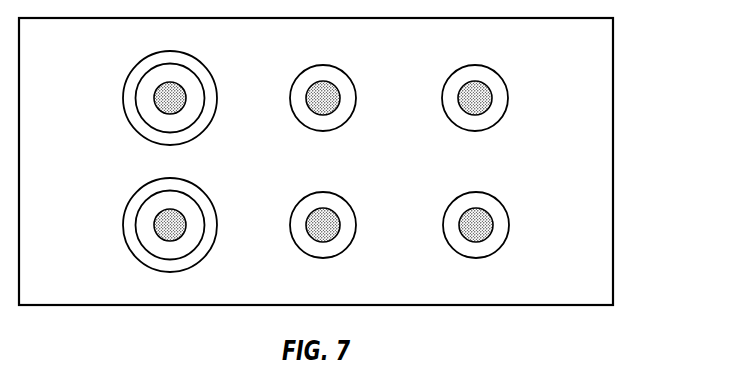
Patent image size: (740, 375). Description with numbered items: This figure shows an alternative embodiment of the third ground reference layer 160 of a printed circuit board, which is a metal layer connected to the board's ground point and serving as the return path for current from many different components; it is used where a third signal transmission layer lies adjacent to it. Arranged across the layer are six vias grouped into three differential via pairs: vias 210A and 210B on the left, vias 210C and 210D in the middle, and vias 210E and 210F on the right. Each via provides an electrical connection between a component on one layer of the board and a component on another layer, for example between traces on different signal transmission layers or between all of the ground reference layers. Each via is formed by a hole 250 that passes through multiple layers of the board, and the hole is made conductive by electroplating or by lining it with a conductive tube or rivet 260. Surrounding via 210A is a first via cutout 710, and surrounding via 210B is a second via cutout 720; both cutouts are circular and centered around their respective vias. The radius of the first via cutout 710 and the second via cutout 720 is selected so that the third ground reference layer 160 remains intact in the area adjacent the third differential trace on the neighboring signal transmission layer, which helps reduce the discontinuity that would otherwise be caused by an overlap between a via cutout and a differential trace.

The third ground reference layer 160 is at (638, 151).
The via 210A is at (200, 80).
The via 210B is at (205, 244).
The via 210C is at (322, 66).
The via 210D is at (323, 258).
The via 210E is at (476, 66).
The via 210F is at (476, 258).
The hole 250 is at (187, 98).
The conductive tube or rivet 260 is at (201, 238).
The first via cutout 710 is at (215, 112).
The second via cutout 720 is at (215, 208).